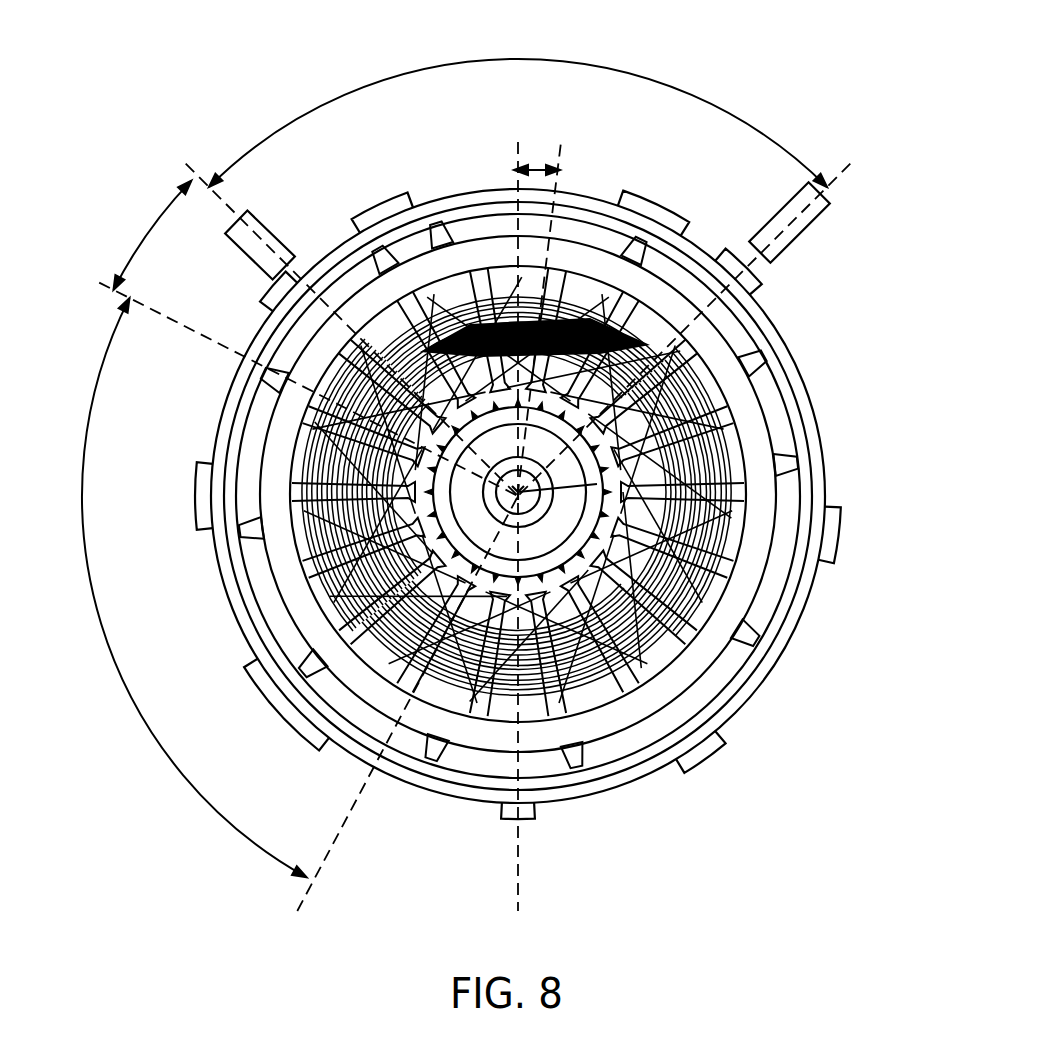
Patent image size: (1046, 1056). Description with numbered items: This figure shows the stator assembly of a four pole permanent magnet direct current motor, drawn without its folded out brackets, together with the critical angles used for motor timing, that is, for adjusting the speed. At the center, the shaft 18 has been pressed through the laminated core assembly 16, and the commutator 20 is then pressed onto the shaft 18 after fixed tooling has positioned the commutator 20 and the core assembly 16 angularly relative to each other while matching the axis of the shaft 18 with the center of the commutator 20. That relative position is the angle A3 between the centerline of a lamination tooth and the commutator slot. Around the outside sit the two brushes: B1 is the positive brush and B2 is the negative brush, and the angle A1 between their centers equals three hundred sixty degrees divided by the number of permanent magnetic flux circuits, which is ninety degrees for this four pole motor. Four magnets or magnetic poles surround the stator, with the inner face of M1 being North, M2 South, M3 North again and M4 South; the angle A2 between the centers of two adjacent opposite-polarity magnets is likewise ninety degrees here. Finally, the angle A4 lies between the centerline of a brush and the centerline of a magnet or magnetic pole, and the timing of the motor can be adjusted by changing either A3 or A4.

The core assembly 16 is at (718, 555).
The shaft 18 is at (732, 433).
The commutator 20 is at (687, 633).
The magnet M1 is at (290, 455).
The magnet M2 is at (360, 683).
The magnet M3 is at (727, 618).
The magnet M4 is at (718, 355).
The positive brush B1 is at (243, 238).
The negative brush B2 is at (800, 228).
The angle between brush centers A1 is at (498, 59).
The angle between adjacent magnets A2 is at (150, 724).
The angle between lamination tooth centerline and commutator slot A3 is at (538, 166).
The angle between brush centerline and magnet centerline A4 is at (147, 236).